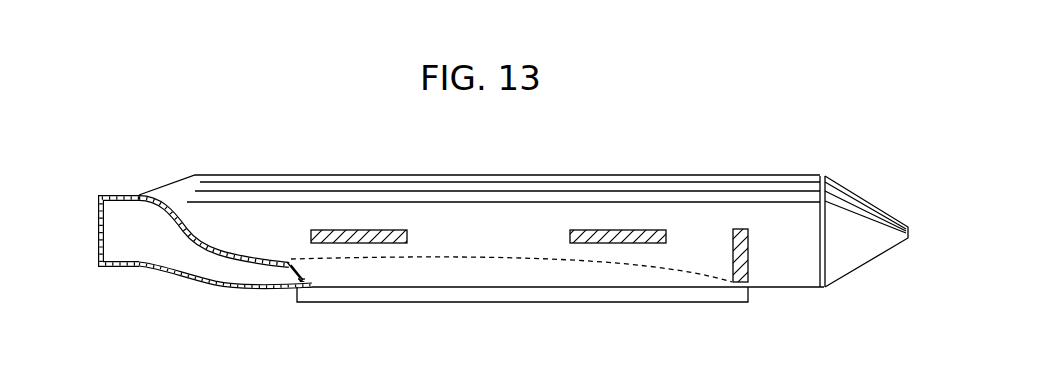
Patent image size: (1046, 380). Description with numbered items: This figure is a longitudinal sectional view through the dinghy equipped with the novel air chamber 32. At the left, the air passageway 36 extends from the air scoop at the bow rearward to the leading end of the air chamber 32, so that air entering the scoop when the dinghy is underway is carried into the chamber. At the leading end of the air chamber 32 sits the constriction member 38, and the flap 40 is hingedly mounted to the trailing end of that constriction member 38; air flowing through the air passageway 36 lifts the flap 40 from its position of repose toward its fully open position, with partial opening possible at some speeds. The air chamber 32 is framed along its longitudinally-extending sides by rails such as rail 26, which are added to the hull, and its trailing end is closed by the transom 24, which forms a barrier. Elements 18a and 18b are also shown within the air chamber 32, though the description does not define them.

The air chamber 32 is at (557, 284).
The air passageway 36 is at (153, 252).
The constriction member 38 is at (297, 261).
The flap 40 is at (306, 281).
The heating element 18a is at (603, 229).
The heating element 18b is at (384, 230).
The transom 24 is at (749, 238).
The rail 26 is at (490, 295).